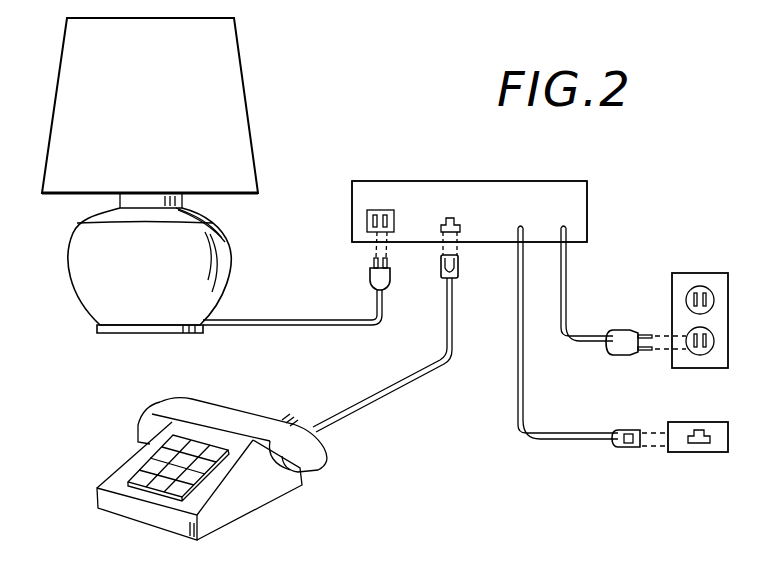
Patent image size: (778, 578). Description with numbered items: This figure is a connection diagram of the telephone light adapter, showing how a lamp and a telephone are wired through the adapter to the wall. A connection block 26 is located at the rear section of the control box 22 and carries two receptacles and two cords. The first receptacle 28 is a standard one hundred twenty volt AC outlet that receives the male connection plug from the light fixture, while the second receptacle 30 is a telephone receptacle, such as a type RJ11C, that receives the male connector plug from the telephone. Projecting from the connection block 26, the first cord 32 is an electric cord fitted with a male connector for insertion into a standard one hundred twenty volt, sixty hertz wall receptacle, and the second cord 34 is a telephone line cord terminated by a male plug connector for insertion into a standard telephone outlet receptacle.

The control box 22 is at (430, 172).
The connection block 26 is at (567, 195).
The first receptacle 28 is at (367, 221).
The second receptacle 30 is at (455, 220).
The first cord 32 is at (566, 284).
The second cord 34 is at (523, 380).